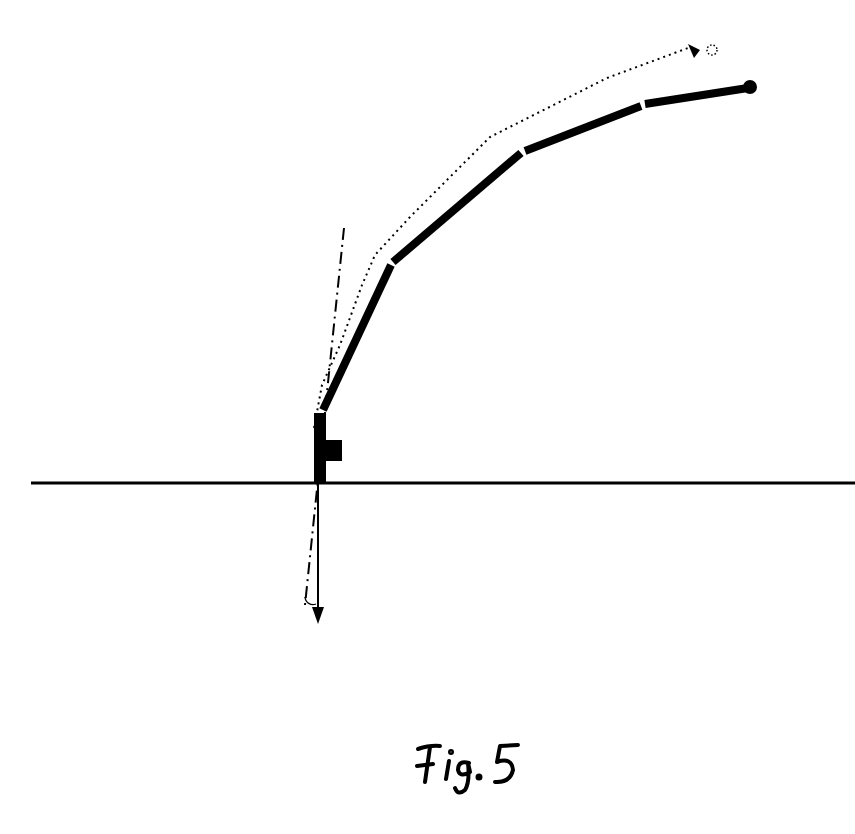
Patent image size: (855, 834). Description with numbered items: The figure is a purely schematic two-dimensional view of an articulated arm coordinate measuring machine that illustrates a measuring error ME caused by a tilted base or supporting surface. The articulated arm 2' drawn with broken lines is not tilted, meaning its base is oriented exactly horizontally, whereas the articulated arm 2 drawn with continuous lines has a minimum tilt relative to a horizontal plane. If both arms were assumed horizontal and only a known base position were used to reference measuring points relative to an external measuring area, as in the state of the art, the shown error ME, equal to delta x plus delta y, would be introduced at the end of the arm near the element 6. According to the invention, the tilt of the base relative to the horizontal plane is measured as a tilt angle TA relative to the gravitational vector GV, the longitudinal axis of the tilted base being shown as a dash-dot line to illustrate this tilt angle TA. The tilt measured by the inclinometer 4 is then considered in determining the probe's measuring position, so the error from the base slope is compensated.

The articulated arm 2 is at (535, 249).
The articulated arm 2' is at (501, 238).
The inclinometer 4 is at (300, 450).
The blade tip 6 is at (742, 114).
The measuring error ME is at (746, 48).
The gravitational vector GV is at (280, 560).
The tilt angle TA is at (267, 444).